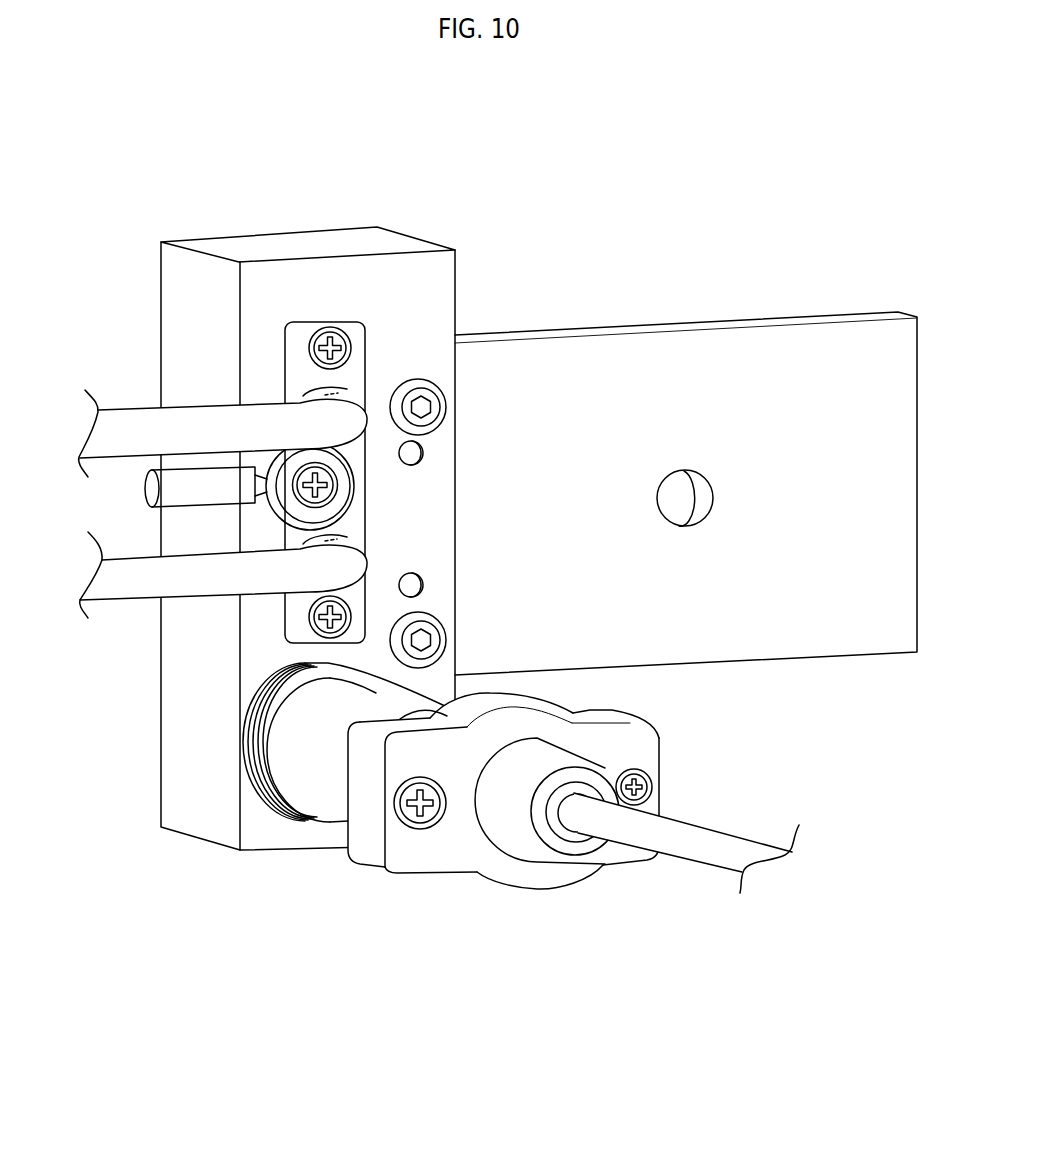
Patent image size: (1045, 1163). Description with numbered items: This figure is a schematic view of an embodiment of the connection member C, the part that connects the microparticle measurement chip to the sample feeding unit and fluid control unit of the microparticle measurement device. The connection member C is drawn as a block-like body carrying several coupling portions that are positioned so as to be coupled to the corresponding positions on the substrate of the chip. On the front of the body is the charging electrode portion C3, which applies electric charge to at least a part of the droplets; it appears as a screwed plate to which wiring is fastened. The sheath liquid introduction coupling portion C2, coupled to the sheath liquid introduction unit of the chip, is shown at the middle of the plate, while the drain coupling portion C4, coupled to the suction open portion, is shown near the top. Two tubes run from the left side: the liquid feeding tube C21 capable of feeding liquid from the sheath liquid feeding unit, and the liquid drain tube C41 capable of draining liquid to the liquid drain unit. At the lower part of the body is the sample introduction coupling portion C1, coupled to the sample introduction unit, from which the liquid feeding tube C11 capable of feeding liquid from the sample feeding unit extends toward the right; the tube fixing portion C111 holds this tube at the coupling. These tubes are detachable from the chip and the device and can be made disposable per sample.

The connection member C is at (824, 244).
The sample introduction coupling portion C1 is at (304, 770).
The liquid feeding tube C11 is at (667, 831).
The tube fixing portion C111 is at (485, 710).
The sheath liquid introduction coupling portion C2 is at (325, 542).
The liquid feeding tube C21 is at (168, 587).
The charging electrode portion C3 is at (300, 362).
The drain coupling portion C4 is at (312, 402).
The liquid drain tube C41 is at (224, 428).